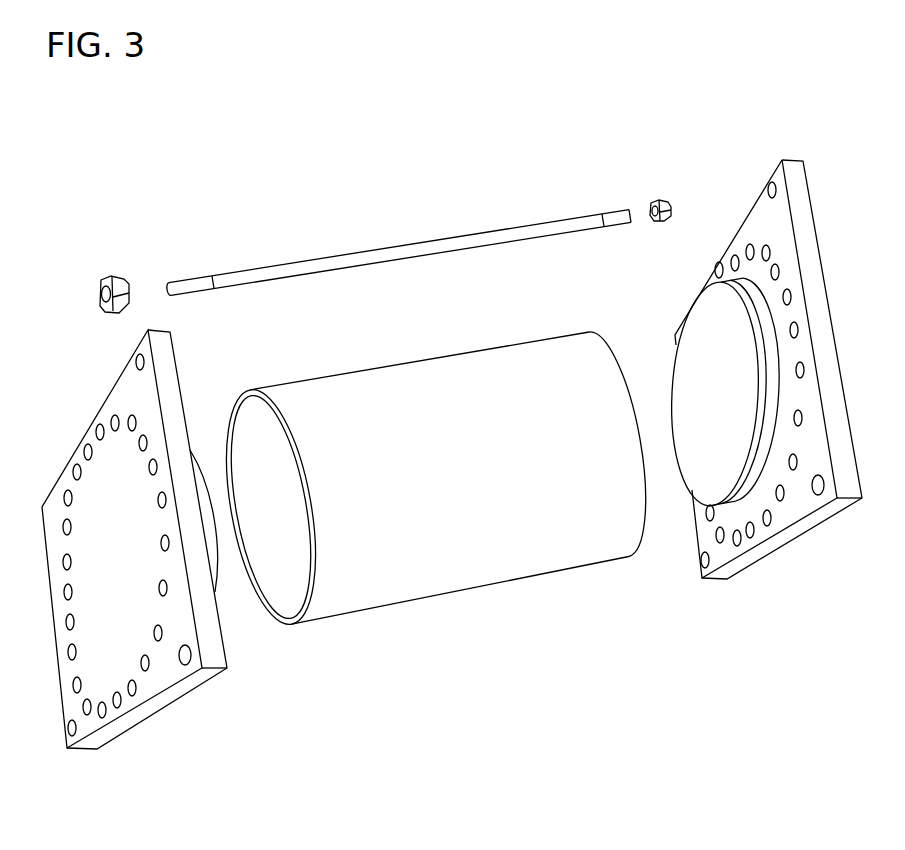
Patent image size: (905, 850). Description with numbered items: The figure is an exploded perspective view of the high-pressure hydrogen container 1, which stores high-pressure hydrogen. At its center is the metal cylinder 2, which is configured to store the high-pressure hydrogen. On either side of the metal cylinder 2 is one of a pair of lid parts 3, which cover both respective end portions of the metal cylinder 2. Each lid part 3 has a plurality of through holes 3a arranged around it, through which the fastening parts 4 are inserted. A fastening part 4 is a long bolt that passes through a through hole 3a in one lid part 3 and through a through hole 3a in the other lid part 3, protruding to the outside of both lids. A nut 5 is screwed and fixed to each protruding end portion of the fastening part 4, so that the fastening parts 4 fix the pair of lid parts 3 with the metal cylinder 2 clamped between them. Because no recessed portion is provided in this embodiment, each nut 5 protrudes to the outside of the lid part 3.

The high-pressure hydrogen container 1 is at (544, 187).
The metal cylinder 2 is at (396, 383).
The lid part 3 is at (120, 405).
The through hole 3a is at (87, 430).
The fastening part 4 is at (386, 244).
The nut 5 is at (107, 278).